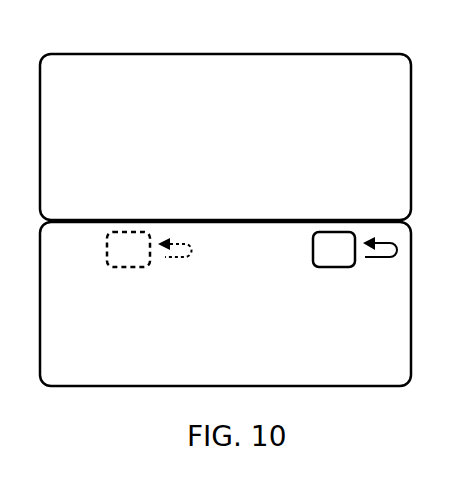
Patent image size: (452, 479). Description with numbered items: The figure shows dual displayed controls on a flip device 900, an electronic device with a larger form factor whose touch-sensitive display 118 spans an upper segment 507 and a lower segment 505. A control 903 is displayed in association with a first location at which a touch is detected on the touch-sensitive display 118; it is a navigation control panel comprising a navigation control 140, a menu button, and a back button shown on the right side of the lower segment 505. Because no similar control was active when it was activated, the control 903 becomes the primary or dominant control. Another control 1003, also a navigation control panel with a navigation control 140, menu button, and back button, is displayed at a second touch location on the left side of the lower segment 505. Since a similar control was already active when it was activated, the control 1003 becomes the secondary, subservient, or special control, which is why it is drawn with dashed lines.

The flip device 900 is at (82, 42).
The touch-sensitive display 118 is at (373, 66).
The upper housing portion 507 is at (411, 91).
The lower segment 505 is at (411, 278).
The navigation control 140 is at (123, 232).
The control 1003 is at (107, 263).
The control 903 is at (314, 263).